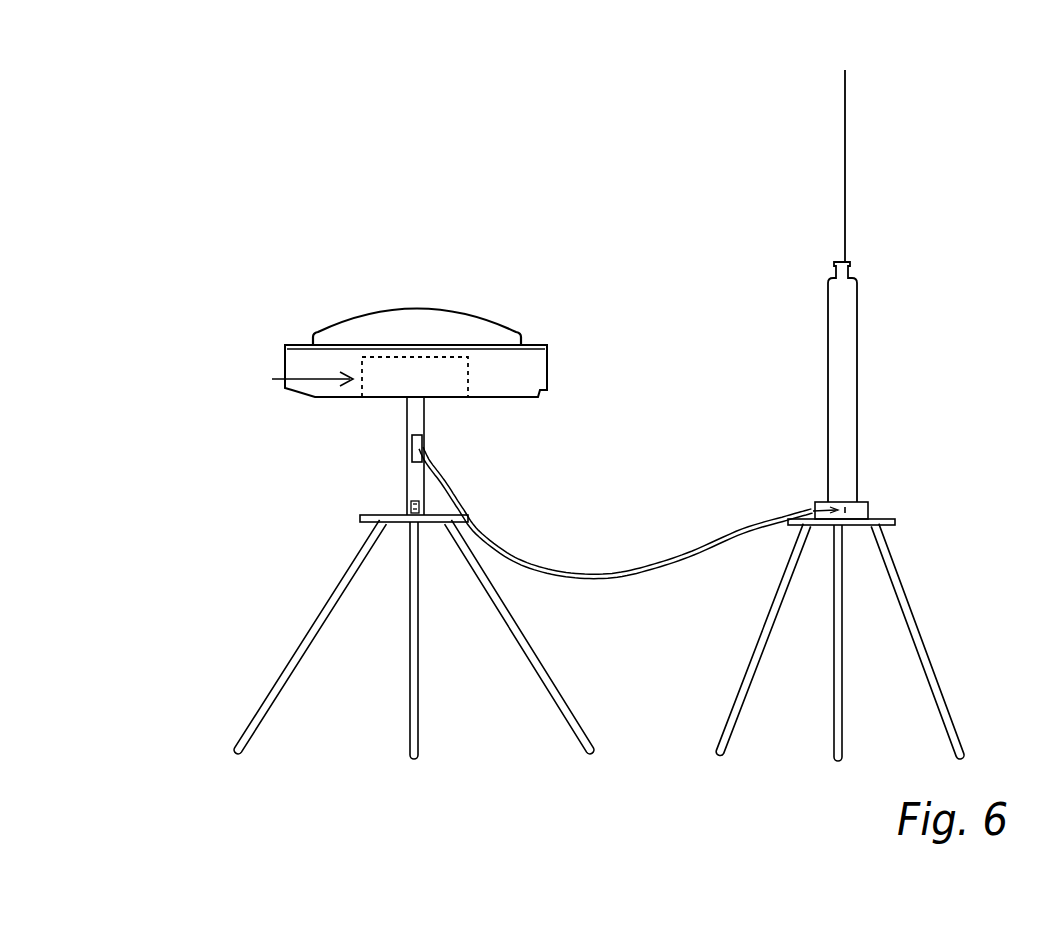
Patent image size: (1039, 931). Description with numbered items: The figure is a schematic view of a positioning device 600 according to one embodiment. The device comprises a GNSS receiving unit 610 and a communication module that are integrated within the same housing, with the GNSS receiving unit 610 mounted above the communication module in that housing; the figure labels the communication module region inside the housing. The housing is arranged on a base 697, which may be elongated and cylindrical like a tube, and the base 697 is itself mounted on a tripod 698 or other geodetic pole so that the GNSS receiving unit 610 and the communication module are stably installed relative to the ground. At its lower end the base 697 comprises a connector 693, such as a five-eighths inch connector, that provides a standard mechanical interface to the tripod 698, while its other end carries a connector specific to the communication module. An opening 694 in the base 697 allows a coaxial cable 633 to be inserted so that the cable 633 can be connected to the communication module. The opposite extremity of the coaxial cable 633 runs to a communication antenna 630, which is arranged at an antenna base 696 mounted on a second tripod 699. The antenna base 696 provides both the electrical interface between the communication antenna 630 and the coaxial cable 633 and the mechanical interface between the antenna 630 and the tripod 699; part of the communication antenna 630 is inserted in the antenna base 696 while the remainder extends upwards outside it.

The positioning device 600 is at (493, 285).
The GNSS receiving unit 610 is at (335, 317).
The communication antenna 630 is at (845, 163).
The coaxial cable 633 is at (603, 577).
The connector 693 is at (410, 522).
The opening 694 is at (423, 440).
The antenna base 696 is at (833, 378).
The base 697 is at (415, 408).
The tripod 698 is at (300, 647).
The tripod 699 is at (893, 570).